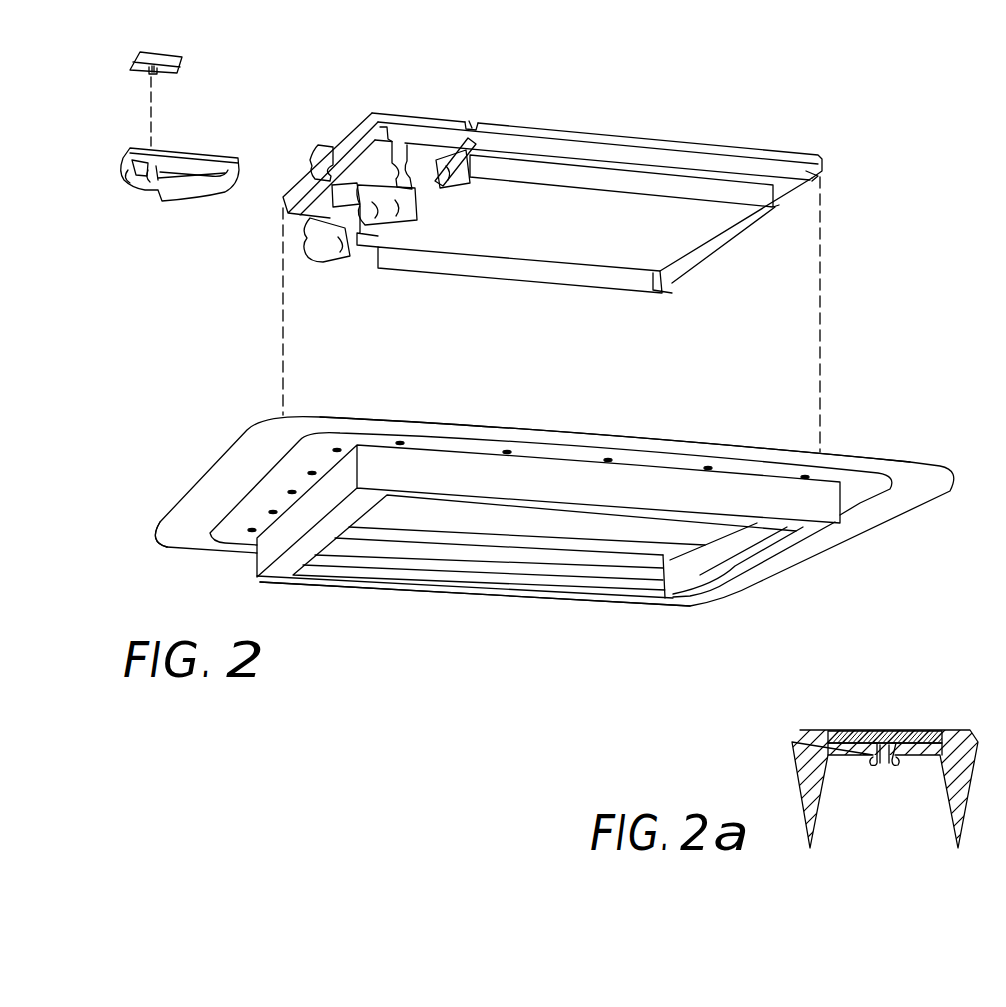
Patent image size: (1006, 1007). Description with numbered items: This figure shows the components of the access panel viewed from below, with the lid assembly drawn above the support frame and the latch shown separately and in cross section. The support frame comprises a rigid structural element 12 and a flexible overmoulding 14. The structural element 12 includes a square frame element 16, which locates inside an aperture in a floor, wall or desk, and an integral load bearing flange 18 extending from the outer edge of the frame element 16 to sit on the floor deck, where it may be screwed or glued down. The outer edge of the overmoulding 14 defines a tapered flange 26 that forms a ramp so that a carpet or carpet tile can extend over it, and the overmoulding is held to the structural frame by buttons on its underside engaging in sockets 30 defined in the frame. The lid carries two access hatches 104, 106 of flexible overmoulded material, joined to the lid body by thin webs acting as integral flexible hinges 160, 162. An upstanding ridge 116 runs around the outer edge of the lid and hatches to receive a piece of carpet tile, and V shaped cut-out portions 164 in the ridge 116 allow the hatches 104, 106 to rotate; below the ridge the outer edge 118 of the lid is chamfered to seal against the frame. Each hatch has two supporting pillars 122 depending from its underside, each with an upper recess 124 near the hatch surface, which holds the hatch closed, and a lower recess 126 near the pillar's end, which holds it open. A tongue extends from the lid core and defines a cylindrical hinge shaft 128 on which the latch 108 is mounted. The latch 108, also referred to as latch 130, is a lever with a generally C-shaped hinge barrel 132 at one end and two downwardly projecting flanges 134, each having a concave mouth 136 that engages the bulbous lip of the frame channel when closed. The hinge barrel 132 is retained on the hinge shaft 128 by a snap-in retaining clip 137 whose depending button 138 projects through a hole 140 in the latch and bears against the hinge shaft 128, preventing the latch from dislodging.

In FIG. 2, the structural element 12 is at (231, 533).
In FIG. 2, the flexible overmoulding 14 is at (248, 447).
In FIG. 2, the square frame element 16 is at (440, 462).
In FIG. 2, the load bearing flange 18 is at (315, 449).
In FIG. 2, the flange 26 is at (170, 532).
In FIG. 2, the sockets 30 is at (270, 513).
In FIG. 2, the access hatch 104 is at (305, 190).
In FIG. 2, the access hatch 106 is at (402, 140).
In FIG. 2, the latch 108 is at (130, 148).
In FIG. 2, the upstanding ridge 116 is at (740, 146).
In FIG. 2, the outer edge 118 is at (820, 174).
In FIG. 2, the supporting pillars 122 is at (418, 211).
In FIG. 2, the upper recess 124 is at (384, 136).
In FIG. 2, the lower recess 126 is at (416, 172).
In FIG. 2, the cylindrical hinge shaft 128 is at (318, 146).
In FIG. 2A, the latch 130 is at (808, 745).
In FIG. 2, the hinge barrel 132 is at (120, 182).
In FIG. 2, the downwardly projecting flanges 134 is at (190, 188).
In FIG. 2, the concave mouth 136 is at (148, 180).
In FIG. 2A, the retaining clip 137 is at (913, 732).
In FIG. 2, the button 138 is at (155, 74).
In FIG. 2A, the button 138 is at (912, 765).
In FIG. 2, the hole 140 is at (126, 176).
In FIG. 2, the flexible hinge 160 is at (372, 242).
In FIG. 2, the flexible hinge 162 is at (478, 148).
In FIG. 2, the V shaped cut-out portions 164 is at (478, 121).